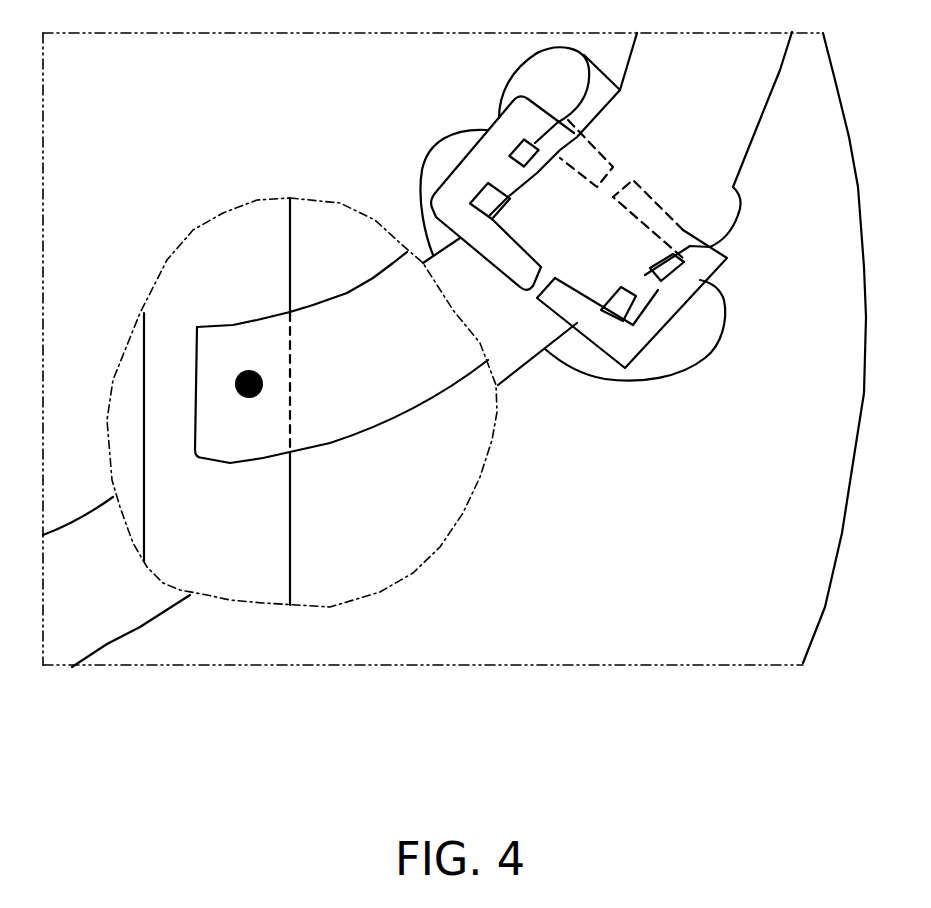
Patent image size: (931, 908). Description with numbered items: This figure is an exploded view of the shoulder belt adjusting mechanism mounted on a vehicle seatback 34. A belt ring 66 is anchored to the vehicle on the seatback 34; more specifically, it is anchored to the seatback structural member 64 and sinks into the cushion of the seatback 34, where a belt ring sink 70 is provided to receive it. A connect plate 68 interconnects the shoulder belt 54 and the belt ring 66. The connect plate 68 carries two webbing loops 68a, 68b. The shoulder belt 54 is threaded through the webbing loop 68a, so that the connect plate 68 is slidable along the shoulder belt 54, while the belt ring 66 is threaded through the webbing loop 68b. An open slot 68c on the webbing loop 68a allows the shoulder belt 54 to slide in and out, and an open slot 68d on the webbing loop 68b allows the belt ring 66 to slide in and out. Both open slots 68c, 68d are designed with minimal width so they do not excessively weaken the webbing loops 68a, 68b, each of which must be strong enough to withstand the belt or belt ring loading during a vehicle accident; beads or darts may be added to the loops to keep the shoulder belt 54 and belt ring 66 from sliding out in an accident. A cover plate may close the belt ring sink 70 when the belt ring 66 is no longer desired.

The seatback 34 is at (175, 120).
The shoulder belt 54 is at (697, 165).
The seatback structural member 64 is at (272, 297).
The belt ring 66 is at (543, 87).
The connect plate 68 is at (667, 298).
The webbing loop 68a is at (625, 325).
The webbing loop 68b is at (687, 267).
The open slot 68c is at (540, 280).
The open slot 68d is at (617, 182).
The belt ring sink 70 is at (680, 358).